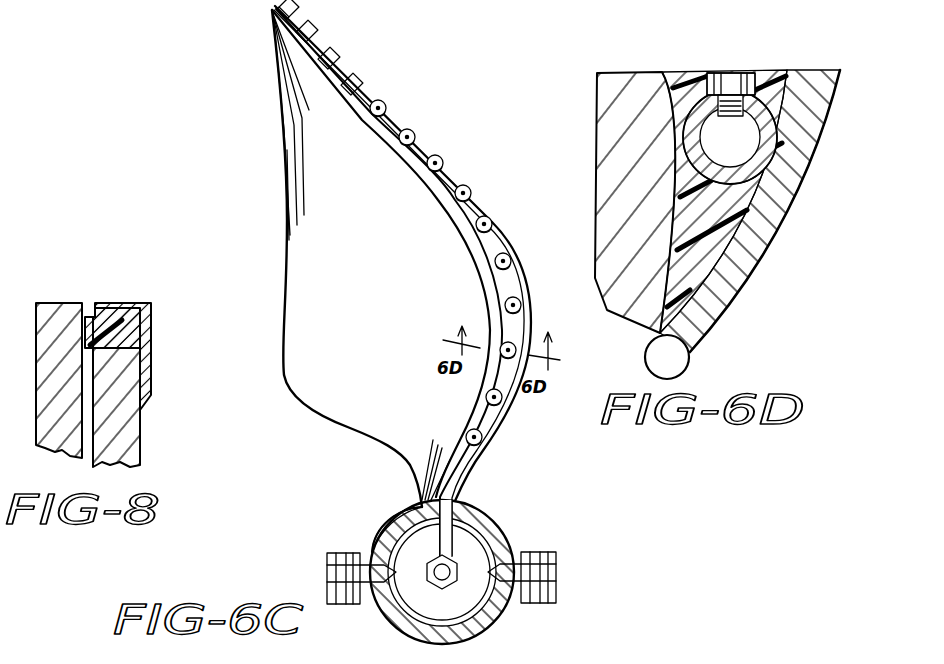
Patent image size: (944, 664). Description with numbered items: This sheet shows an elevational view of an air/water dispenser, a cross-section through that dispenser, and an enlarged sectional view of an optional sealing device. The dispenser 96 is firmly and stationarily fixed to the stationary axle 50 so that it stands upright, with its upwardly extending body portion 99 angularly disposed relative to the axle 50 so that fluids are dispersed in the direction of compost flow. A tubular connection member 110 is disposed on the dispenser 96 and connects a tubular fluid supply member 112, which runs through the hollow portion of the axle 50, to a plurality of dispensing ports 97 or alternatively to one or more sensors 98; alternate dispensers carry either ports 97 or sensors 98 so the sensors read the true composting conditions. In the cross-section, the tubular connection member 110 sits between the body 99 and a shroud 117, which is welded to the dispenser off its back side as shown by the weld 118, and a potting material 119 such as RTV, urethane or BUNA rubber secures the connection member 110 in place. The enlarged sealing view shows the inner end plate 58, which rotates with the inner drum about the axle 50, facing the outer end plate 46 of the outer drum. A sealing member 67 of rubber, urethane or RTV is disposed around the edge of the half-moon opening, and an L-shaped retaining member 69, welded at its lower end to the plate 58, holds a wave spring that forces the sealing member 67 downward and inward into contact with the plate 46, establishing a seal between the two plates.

In FIG. 8, the outer end plate 46 is at (52, 430).
In FIG. 6C, the axle 50 is at (478, 620).
In FIG. 8, the inner end plate 58 is at (123, 437).
In FIG. 8, the sealing member 67 is at (90, 317).
In FIG. 8, the L-shaped retaining member 69 is at (152, 334).
In FIG. 6C, the dispenser 96 is at (303, 185).
In FIG. 6D, the dispensing port 97 is at (727, 71).
In FIG. 6D, the sensor 98 is at (731, 84).
In FIG. 6C, the body portion 99 is at (397, 325).
In FIG. 6D, the body portion 99 is at (620, 130).
In FIG. 6C, the tubular connection member 110 is at (457, 546).
In FIG. 6D, the tubular connection member 110 is at (722, 120).
In FIG. 6C, the tubular fluid supply member 112 is at (430, 582).
In FIG. 6C, the shroud 117 is at (466, 184).
In FIG. 6D, the shroud 117 is at (790, 172).
In FIG. 6D, the weld 118 is at (688, 360).
In FIG. 6D, the potting material 119 is at (787, 74).